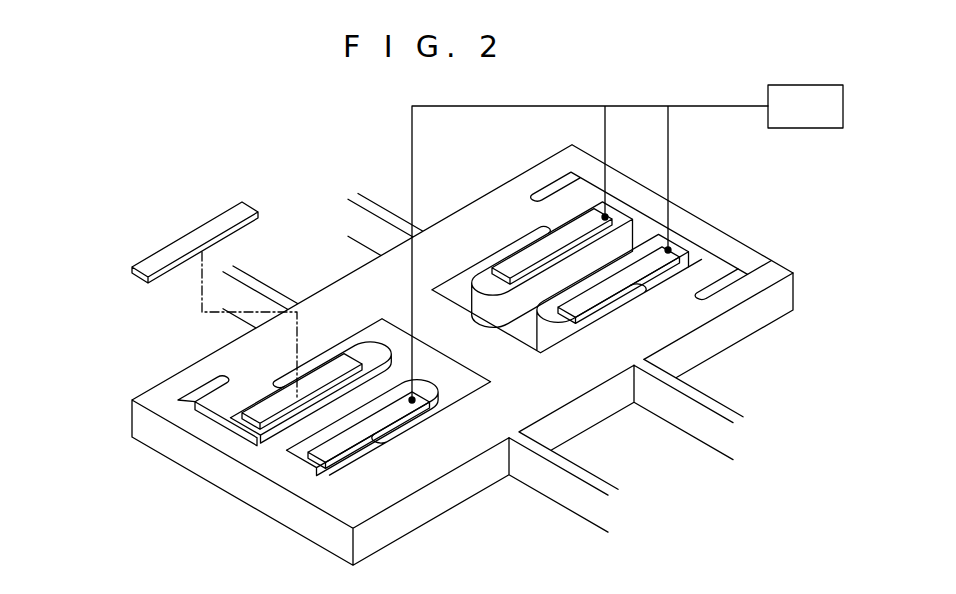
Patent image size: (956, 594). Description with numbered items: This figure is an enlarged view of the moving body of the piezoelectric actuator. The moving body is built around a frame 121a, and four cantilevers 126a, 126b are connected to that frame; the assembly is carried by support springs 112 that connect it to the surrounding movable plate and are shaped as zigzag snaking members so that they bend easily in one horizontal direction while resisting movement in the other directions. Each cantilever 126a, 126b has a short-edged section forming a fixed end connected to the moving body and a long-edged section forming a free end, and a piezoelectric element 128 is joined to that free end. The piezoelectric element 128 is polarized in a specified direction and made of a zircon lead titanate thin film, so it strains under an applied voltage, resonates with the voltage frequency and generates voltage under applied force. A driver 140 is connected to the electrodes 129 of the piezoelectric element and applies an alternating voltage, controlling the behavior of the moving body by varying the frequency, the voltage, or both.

The support spring 112 is at (557, 487).
The frame 121a is at (683, 318).
The cantilever 126a is at (568, 202).
The cantilever 126b is at (342, 473).
The piezoelectric element 128 is at (193, 240).
The electrode 129 is at (670, 250).
The driver 140 is at (627, 242).